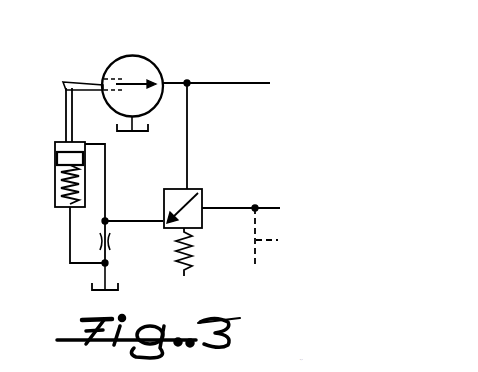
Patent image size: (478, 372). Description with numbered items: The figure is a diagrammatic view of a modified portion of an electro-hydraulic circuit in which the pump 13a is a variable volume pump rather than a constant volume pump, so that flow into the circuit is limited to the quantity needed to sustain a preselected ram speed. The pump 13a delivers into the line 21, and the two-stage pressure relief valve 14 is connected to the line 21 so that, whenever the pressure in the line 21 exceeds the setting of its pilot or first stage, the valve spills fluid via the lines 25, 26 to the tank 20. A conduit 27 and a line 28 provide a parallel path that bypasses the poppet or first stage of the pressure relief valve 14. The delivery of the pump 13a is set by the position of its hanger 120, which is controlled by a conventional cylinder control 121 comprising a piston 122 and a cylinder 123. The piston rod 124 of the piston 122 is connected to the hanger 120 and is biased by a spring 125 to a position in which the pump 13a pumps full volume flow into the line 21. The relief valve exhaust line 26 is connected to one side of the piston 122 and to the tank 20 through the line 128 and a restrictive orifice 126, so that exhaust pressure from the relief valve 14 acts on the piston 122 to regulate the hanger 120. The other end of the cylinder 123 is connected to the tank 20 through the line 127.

The variable volume pump 13a is at (141, 57).
The two-stage pressure relief valve 14 is at (193, 188).
The tank 20 is at (137, 135).
The line 21 is at (233, 83).
The line 25 is at (190, 140).
The relief valve exhaust line 26 is at (133, 219).
The conduit 27 is at (232, 206).
The line 28 is at (277, 238).
The hanger 120 is at (88, 80).
The cylinder control 121 is at (50, 192).
The piston 122 is at (57, 158).
The cylinder 123 is at (55, 184).
The piston rod 124 is at (65, 112).
The spring 125 is at (82, 205).
The restrictive orifice 126 is at (113, 243).
The line 127 is at (66, 268).
The line 128 is at (106, 178).